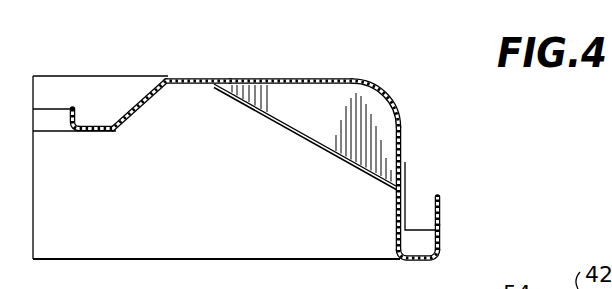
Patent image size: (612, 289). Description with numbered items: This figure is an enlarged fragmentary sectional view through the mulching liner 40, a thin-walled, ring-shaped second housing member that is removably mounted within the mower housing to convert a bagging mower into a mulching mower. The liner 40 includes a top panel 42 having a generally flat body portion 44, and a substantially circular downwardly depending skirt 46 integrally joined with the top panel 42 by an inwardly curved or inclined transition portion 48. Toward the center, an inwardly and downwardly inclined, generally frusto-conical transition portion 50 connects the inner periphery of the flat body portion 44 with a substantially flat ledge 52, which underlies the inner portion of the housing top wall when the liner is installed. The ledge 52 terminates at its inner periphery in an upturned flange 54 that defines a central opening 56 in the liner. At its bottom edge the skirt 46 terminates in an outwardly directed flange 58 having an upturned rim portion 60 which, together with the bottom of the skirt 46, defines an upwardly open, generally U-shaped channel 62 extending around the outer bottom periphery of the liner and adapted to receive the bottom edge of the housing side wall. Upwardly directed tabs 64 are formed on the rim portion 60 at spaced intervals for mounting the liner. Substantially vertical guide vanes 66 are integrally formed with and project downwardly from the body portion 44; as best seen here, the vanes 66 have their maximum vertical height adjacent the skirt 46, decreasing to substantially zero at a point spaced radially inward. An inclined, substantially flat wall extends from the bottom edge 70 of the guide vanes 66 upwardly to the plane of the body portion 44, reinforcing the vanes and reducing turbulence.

The liner 40 is at (410, 126).
The top panel 42 is at (211, 78).
The flat body portion 44 is at (281, 78).
The skirt 46 is at (403, 158).
The transition portion 48 is at (392, 102).
The frusto-conical transition portion 50 is at (144, 92).
The ledge 52 is at (92, 132).
The upturned flange 54 is at (77, 112).
The central opening 56 is at (55, 113).
The outwardly directed flange 58 is at (416, 261).
The upturned rim portion 60 is at (441, 240).
The U-shaped channel 62 is at (416, 231).
The tabs 64 is at (441, 203).
The guide vanes 66 is at (337, 101).
The bottom edge 70 is at (297, 135).